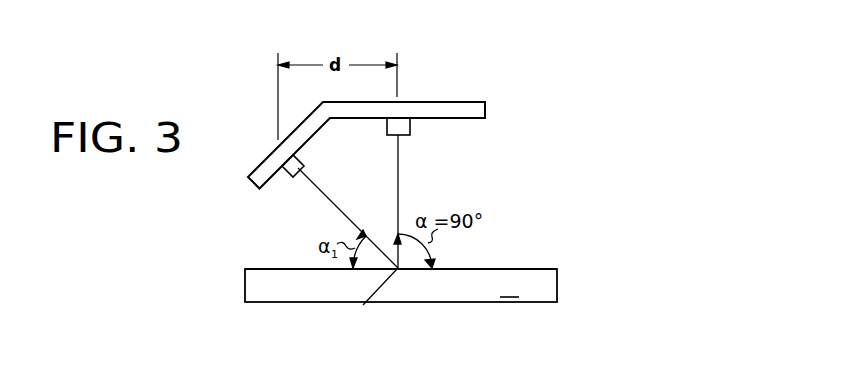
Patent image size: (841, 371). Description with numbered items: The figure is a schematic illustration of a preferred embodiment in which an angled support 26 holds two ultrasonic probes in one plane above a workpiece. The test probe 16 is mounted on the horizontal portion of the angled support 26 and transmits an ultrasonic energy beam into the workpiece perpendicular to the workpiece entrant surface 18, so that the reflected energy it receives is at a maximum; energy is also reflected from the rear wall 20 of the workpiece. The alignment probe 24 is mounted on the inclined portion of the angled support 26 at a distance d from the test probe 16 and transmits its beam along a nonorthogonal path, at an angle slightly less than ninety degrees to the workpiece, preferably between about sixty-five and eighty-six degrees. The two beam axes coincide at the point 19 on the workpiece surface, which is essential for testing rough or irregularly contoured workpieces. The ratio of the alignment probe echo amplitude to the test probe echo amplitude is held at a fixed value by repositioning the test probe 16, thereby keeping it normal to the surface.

The test probe 16 is at (408, 135).
The workpiece entrant surface 18 is at (523, 269).
The point on the surface of the workpiece 19 is at (367, 296).
The rear wall 20 is at (480, 302).
The alignment probe 24 is at (304, 162).
The angled support 26 is at (485, 110).